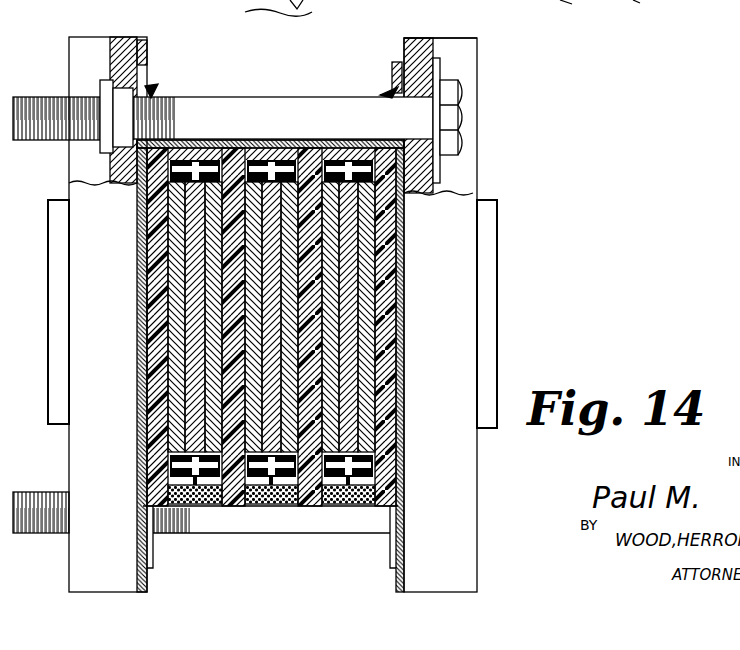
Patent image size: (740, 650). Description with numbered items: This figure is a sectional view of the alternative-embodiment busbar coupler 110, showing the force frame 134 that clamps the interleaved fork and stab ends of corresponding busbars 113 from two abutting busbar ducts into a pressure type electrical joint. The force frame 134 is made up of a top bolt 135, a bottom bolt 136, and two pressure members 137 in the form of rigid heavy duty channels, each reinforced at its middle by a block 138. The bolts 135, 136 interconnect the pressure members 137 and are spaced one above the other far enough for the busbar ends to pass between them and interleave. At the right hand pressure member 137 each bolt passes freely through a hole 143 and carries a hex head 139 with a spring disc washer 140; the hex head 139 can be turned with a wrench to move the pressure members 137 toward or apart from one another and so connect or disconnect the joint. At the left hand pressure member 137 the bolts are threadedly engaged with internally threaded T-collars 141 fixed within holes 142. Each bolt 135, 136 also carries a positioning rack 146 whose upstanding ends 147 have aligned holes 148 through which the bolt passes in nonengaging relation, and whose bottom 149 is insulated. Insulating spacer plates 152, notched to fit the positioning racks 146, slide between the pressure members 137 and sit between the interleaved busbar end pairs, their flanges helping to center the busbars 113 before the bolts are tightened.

The busbar coupler 110 is at (500, 188).
The busbars 113 is at (342, 300).
The force frame 134 is at (462, 57).
The top bolt 135 is at (460, 110).
The bottom bolt 136 is at (43, 500).
The pressure members 137 is at (69, 52).
The blocks 138 is at (57, 265).
The hex head 139 is at (460, 140).
The spring disc washer 140 is at (440, 168).
The T-collars 141 is at (120, 95).
The holes 142 is at (116, 92).
The holes 143 is at (420, 138).
The positioning rack 146 is at (270, 147).
The upstanding ends 147 is at (147, 57).
The aligned holes 148 is at (158, 90).
The bottom 149 is at (214, 147).
The spacer plates 152 is at (172, 133).